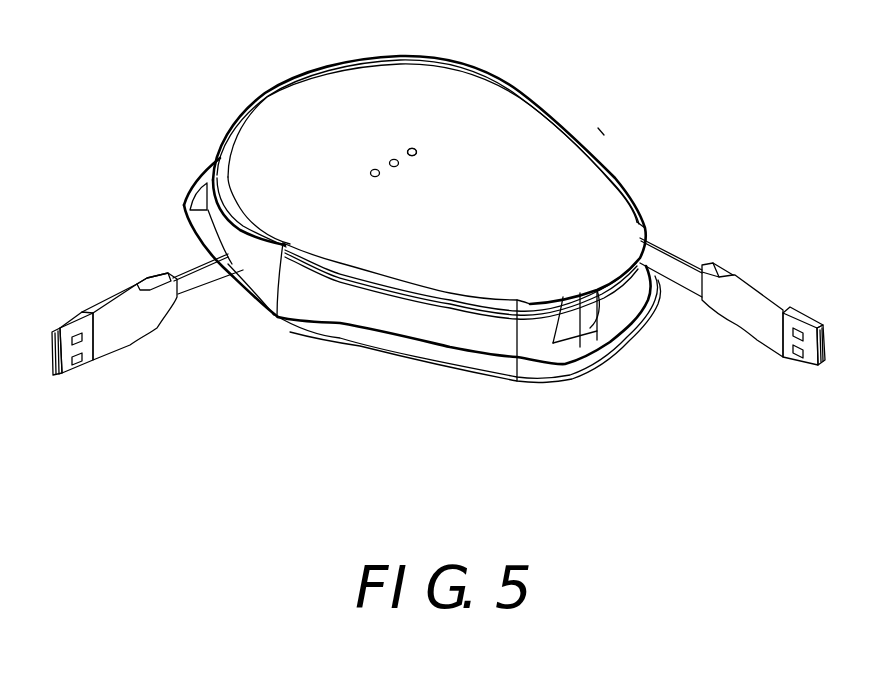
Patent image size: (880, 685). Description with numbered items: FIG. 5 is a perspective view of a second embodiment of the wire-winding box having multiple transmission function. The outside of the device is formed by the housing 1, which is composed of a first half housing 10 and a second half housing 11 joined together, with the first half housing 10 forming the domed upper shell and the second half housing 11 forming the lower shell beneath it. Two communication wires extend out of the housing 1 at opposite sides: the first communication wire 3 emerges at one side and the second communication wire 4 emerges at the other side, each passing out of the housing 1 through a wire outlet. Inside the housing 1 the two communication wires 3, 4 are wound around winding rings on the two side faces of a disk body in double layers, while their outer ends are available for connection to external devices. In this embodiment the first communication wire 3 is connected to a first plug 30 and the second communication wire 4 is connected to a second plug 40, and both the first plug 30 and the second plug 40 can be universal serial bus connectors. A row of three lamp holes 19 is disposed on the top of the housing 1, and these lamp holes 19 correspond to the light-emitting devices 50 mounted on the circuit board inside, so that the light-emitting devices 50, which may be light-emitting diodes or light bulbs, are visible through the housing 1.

The housing 1 is at (280, 330).
The first half housing 10 is at (597, 178).
The second half housing 11 is at (487, 380).
The lamp holes 19 is at (411, 147).
The light-emitting devices 50 is at (416, 147).
The first communication wire 3 is at (187, 267).
The first plug 30 is at (110, 327).
The second communication wire 4 is at (680, 270).
The second plug 40 is at (750, 285).